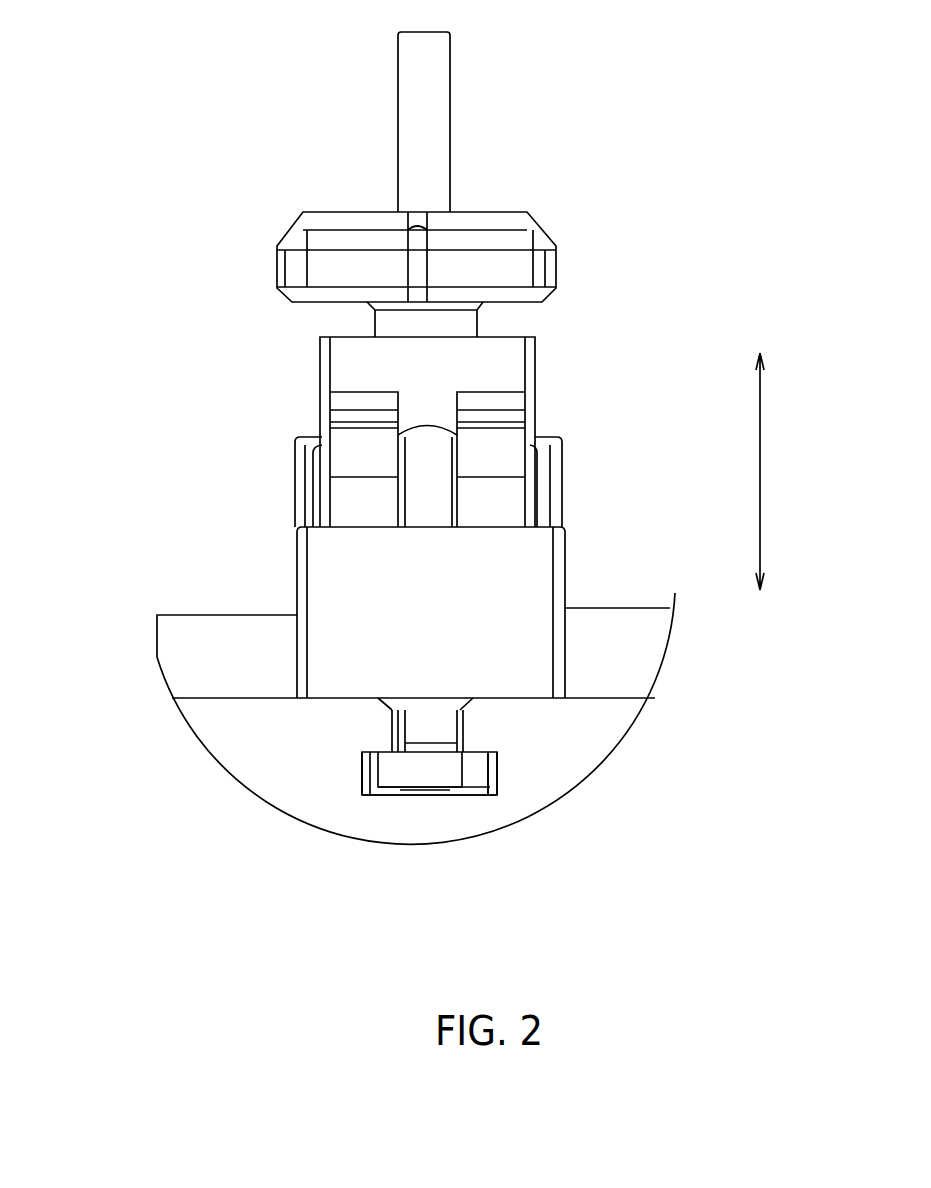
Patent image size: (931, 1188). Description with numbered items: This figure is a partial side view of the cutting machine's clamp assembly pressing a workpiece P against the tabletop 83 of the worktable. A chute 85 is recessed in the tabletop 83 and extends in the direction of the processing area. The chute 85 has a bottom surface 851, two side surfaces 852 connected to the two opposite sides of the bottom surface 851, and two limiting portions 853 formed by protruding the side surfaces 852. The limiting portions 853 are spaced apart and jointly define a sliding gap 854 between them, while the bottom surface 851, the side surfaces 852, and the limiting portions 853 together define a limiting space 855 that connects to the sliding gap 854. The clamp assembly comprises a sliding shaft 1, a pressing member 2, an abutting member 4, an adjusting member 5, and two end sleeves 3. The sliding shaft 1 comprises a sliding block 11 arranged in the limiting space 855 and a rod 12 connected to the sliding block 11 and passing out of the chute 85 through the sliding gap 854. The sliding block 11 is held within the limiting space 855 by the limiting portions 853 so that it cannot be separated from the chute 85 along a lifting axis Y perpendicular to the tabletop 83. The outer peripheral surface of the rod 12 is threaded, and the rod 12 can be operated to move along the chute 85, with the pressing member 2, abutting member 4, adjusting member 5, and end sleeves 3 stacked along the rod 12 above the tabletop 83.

The sliding shaft 1 is at (427, 768).
The sliding block 11 is at (442, 762).
The rod 12 is at (430, 118).
The pressing member 2 is at (505, 443).
The end sleeves 3 is at (530, 540).
The abutting member 4 is at (500, 368).
The adjusting member 5 is at (515, 270).
The tabletop 83 is at (208, 695).
The chute 85 is at (405, 797).
The bottom surface 851 is at (422, 797).
The side surfaces 852 is at (362, 776).
The limiting portions 853 is at (378, 728).
The sliding gap 854 is at (463, 720).
The limiting space 855 is at (498, 790).
The plate P is at (213, 630).
The lifting axis Y is at (772, 471).